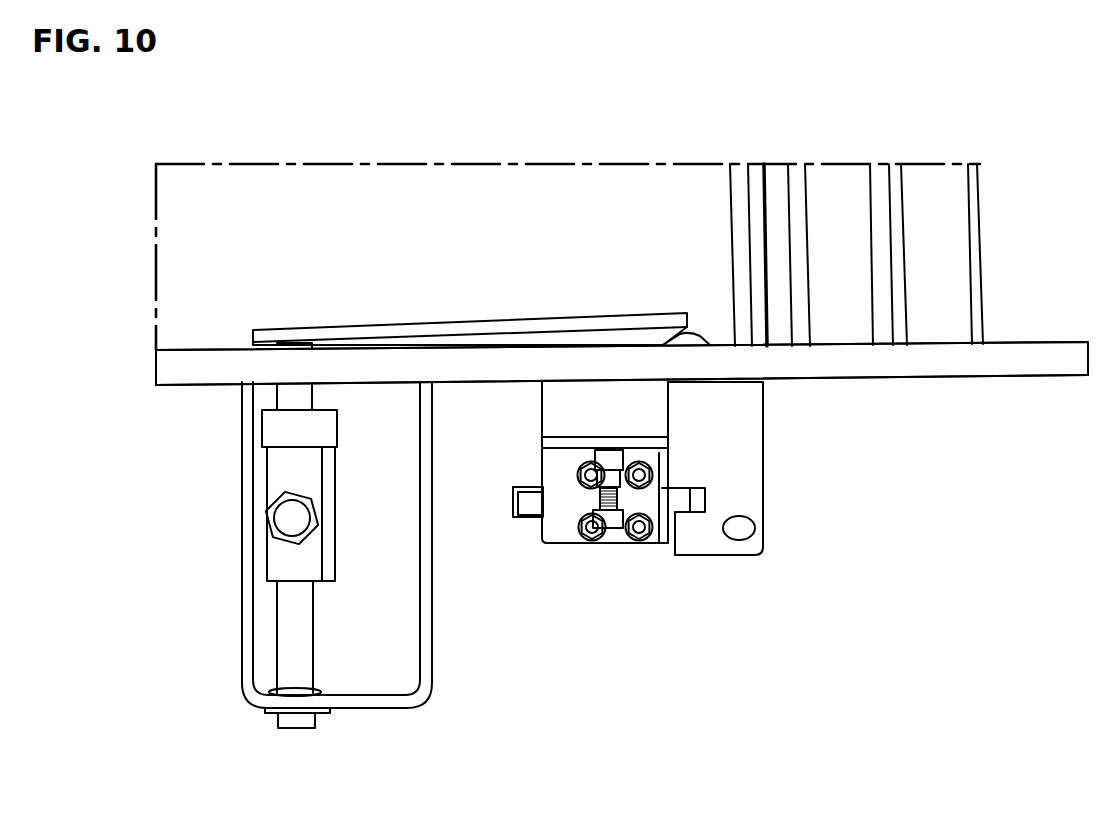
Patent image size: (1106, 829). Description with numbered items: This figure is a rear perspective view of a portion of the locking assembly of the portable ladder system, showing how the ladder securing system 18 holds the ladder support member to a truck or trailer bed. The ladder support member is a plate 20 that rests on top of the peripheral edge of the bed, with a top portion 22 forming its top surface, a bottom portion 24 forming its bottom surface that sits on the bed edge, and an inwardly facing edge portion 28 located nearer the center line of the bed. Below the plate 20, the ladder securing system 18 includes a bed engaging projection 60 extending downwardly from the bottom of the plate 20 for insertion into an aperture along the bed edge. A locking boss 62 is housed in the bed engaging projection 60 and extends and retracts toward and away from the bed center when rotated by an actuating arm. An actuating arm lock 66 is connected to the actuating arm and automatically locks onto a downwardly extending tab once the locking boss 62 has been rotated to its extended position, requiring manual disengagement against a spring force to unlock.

The ladder securing system 18 is at (533, 603).
The plate 20 is at (996, 368).
The top portion 22 is at (195, 350).
The bottom portion 24 is at (180, 386).
The inwardly facing edge portion 28 is at (170, 374).
The bed engaging projection 60 is at (427, 703).
The locking boss 62 is at (320, 438).
The actuating arm lock 66 is at (638, 565).